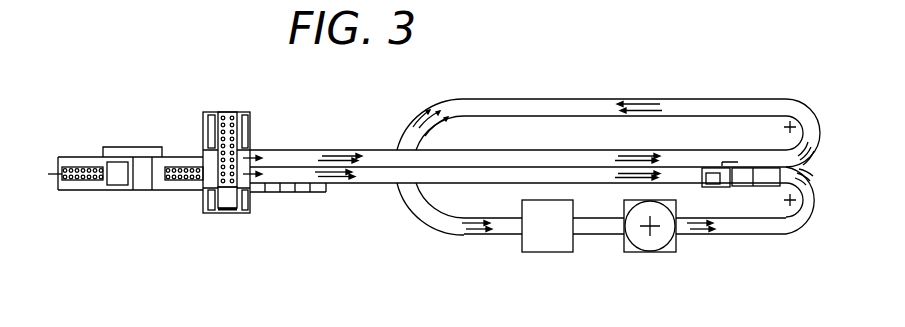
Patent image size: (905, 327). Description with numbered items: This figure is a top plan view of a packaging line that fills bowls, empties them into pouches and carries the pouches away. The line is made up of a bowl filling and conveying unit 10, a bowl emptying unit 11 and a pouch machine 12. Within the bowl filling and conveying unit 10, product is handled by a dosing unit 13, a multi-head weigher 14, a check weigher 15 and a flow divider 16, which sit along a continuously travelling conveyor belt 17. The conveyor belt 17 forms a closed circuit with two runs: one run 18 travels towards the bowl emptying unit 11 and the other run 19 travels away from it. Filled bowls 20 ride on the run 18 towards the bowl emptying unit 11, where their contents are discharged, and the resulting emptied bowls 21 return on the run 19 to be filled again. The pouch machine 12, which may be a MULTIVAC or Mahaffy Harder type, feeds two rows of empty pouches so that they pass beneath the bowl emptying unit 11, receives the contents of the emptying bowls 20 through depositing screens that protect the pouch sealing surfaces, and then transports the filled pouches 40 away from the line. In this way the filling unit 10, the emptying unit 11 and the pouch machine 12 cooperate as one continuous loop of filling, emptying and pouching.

The bowl filling and conveying unit 10 is at (624, 98).
The bowl emptying unit 11 is at (250, 133).
The pouch machine 12 is at (135, 147).
The dosing unit 13 is at (545, 243).
The multi-head weigher 14 is at (655, 248).
The check weigher 15 is at (760, 196).
The flow divider 16 is at (720, 188).
The conveyor belt 17 is at (745, 108).
The run 18 is at (377, 178).
The run 19 is at (377, 155).
The filled bowls 20 is at (240, 183).
The emptied bowls 21 is at (238, 121).
The filled pouches 40 is at (177, 185).